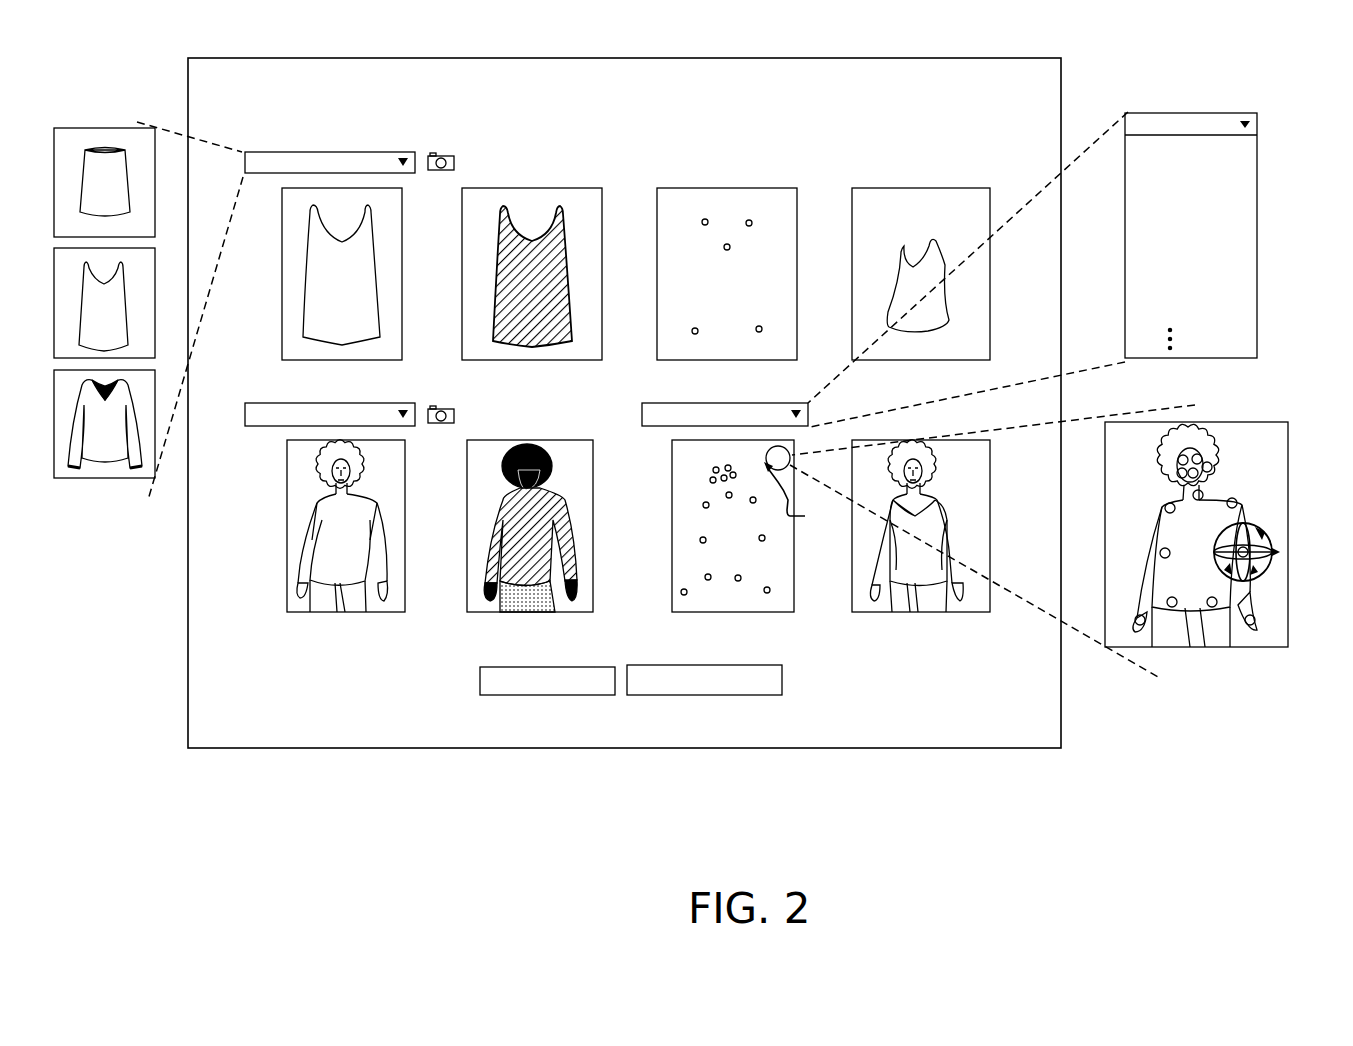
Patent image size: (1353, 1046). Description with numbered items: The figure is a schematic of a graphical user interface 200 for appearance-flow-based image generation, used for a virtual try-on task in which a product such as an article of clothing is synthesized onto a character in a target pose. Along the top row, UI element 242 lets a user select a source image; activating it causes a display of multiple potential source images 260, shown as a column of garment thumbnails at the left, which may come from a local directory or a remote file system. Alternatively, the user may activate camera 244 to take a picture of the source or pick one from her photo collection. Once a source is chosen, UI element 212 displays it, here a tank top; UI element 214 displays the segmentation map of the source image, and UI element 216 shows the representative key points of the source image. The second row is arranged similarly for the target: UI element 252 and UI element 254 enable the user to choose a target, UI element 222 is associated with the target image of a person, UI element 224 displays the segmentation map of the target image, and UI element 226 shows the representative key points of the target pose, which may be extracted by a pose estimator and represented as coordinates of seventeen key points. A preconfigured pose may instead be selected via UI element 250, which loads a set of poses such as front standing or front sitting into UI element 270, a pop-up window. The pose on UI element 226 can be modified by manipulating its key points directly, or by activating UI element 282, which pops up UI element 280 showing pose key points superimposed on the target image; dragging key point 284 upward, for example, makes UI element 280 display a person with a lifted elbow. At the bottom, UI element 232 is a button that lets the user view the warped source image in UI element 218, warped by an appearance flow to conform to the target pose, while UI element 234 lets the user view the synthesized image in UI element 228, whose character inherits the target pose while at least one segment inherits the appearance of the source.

The graphical user interface 200 is at (414, 27).
The UI element 212 is at (282, 297).
The UI element 214 is at (563, 188).
The UI element 216 is at (706, 188).
The UI element 218 is at (886, 188).
The UI element 222 is at (287, 503).
The UI element 224 is at (467, 503).
The UI element 226 is at (672, 503).
The UI element 228 is at (898, 612).
The UI element 232 is at (480, 680).
The UI element 234 is at (782, 682).
The UI element 242 is at (327, 152).
The camera 244 is at (446, 155).
The UI element 250 is at (642, 416).
The UI element 252 is at (268, 427).
The UI element 254 is at (442, 408).
The potential source images 260 is at (112, 128).
The UI element 270 is at (1257, 205).
The UI element 280 is at (1180, 647).
The UI element 282 is at (807, 489).
The key point 284 is at (1246, 552).